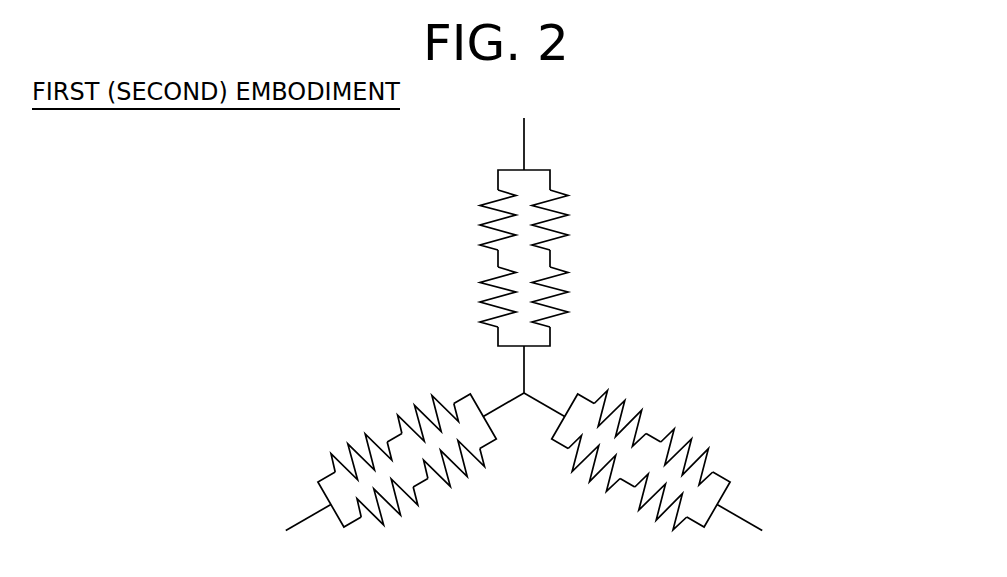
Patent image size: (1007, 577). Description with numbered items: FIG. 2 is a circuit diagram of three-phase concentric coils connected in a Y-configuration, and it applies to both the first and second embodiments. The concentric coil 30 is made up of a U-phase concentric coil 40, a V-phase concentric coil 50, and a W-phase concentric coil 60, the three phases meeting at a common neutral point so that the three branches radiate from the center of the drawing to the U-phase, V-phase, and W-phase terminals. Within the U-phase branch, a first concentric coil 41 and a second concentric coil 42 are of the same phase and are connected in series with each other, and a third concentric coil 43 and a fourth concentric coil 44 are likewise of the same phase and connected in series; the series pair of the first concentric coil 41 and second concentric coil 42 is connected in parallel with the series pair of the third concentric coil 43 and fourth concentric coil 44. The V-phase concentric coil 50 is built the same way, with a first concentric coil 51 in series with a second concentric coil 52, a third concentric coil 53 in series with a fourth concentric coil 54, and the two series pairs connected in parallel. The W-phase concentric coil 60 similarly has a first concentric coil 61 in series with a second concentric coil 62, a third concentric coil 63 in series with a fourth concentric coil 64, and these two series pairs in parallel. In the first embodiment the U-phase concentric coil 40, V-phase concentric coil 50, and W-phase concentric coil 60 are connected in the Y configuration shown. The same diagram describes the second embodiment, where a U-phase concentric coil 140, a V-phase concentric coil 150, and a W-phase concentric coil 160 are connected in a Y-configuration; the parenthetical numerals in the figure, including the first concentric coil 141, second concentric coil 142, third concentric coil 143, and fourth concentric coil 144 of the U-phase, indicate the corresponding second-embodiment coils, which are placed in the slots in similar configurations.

The concentric coil 30 is at (757, 157).
The U-phase concentric coil 40 is at (530, 145).
The U-phase concentric coil 140 is at (531, 217).
The first concentric coil 41 is at (486, 221).
The first concentric coil 141 is at (448, 216).
The second concentric coil 42 is at (486, 302).
The second concentric coil 142 is at (448, 295).
The third concentric coil 43 is at (566, 210).
The third concentric coil 143 is at (601, 210).
The fourth concentric coil 44 is at (566, 292).
The fourth concentric coil 144 is at (601, 290).
The V-phase concentric coil 50 is at (312, 512).
The V-phase concentric coil 150 is at (338, 464).
The first concentric coil 51 is at (350, 443).
The second concentric coil 52 is at (418, 403).
The third concentric coil 53 is at (402, 513).
The fourth concentric coil 54 is at (473, 475).
The W-phase concentric coil 60 is at (742, 514).
The W-phase concentric coil 160 is at (706, 453).
The first concentric coil 61 is at (657, 512).
The second concentric coil 62 is at (587, 473).
The third concentric coil 63 is at (687, 440).
The fourth concentric coil 64 is at (615, 400).